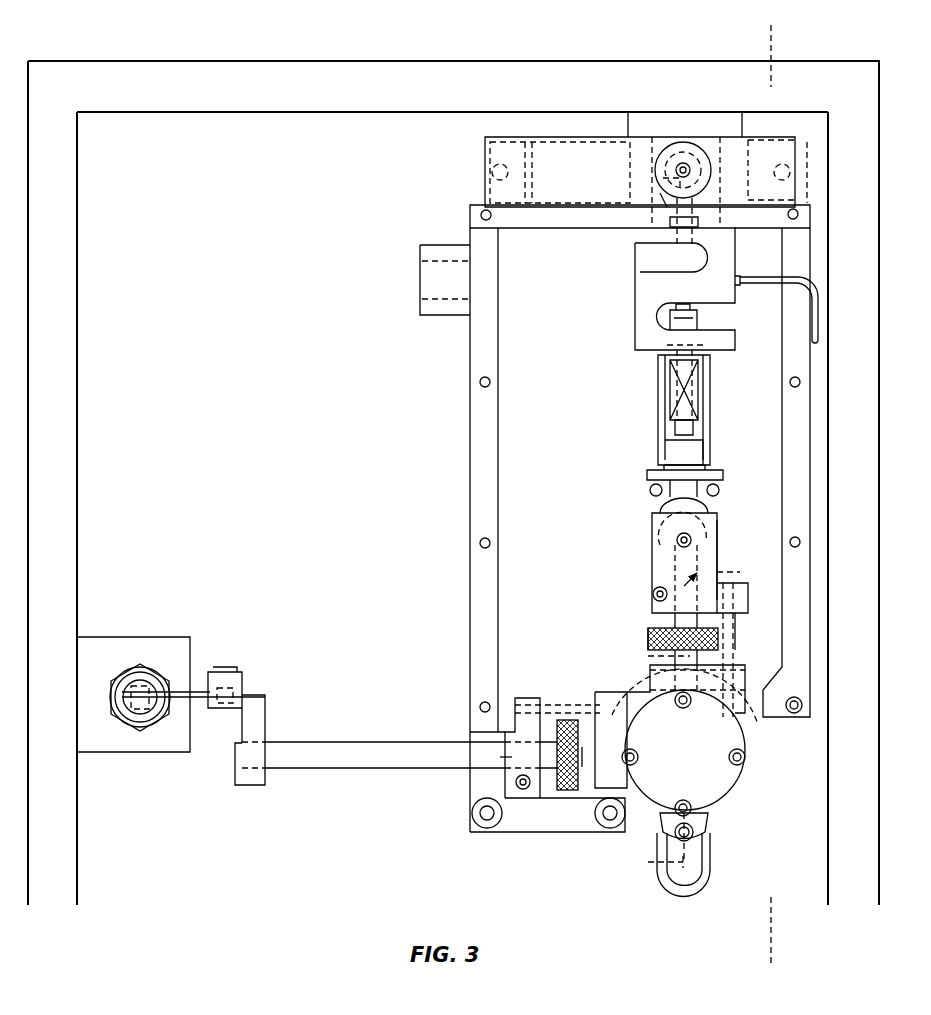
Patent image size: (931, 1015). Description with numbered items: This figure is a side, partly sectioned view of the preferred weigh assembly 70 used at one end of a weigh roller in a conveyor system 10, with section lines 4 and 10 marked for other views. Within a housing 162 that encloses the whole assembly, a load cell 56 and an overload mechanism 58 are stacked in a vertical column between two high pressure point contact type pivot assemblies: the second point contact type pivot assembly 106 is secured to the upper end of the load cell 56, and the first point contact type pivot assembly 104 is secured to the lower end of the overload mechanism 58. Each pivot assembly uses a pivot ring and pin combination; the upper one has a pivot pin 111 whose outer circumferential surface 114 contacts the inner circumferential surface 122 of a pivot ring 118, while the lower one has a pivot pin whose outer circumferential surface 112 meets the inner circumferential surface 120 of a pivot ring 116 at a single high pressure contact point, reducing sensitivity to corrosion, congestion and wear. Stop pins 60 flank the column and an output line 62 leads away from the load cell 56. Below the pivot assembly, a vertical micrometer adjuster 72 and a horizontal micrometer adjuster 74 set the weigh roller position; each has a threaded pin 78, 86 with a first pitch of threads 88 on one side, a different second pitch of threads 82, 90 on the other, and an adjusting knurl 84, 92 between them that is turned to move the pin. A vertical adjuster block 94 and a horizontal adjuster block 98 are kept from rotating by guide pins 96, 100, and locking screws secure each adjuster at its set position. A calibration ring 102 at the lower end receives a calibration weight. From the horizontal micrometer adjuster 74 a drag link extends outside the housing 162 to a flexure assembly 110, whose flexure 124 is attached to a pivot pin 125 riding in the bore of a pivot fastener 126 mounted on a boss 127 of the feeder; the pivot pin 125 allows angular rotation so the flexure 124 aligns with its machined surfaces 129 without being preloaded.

The section line 4- 4 is at (771, 26).
The conveyor system 10 is at (640, 656).
The load cell 56 is at (650, 299).
The overload mechanism 58 is at (658, 401).
The stop pins 60 is at (650, 487).
The output line 62 is at (762, 287).
The weigh assembly 70 is at (340, 377).
The vertical micrometer adjuster 72 is at (728, 628).
The horizontal micrometer adjuster 74 is at (564, 798).
The threaded pin 78 is at (505, 757).
The second pitch of threads 82 is at (584, 753).
The adjusting knurl 84 is at (572, 718).
The threaded pin 86 is at (735, 573).
The first pitch of threads 88 is at (654, 597).
The second pitch of threads 90 is at (665, 674).
The adjusting knurl 92 is at (648, 638).
The vertical adjuster block 94 is at (735, 549).
The guide pin 96 is at (745, 648).
The horizontal adjuster block 98 is at (482, 732).
The guide pin / locking screw 100 is at (548, 692).
The calibration ring 102 is at (696, 896).
The first point contact type pivot assembly 104 is at (735, 521).
The second point contact type pivot assembly 106 is at (765, 189).
The flexure assembly 110 is at (255, 665).
The pivot pin 111 is at (665, 167).
The outer circumferential surface 112 is at (675, 541).
The outer circumferential surface 114 is at (684, 163).
The pivot ring 116 is at (700, 509).
The pivot ring 118 is at (660, 200).
The inner circumferential surface 120 is at (655, 522).
The inner circumferential surface 122 is at (658, 184).
The flexure 124 is at (207, 693).
The pivot pin 125 is at (122, 698).
The pivot fastener 126 is at (136, 666).
The boss 127 is at (110, 755).
The machined surfaces 129 is at (143, 712).
The housing 162 is at (470, 381).